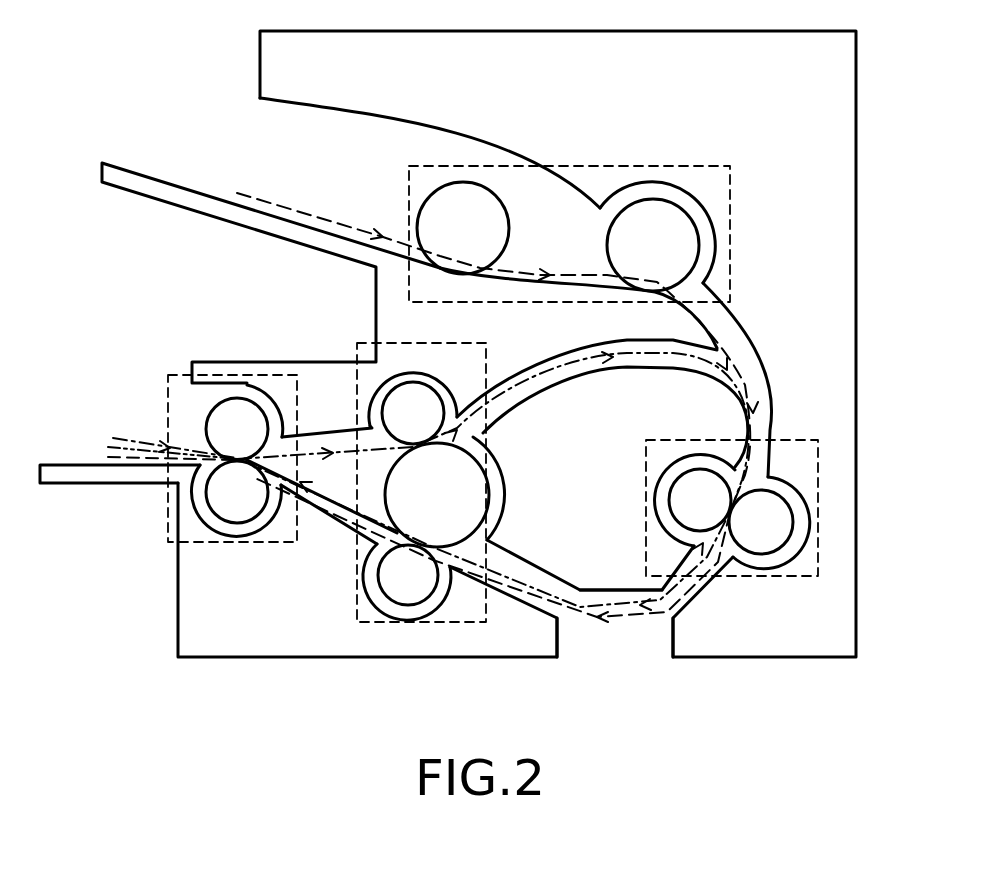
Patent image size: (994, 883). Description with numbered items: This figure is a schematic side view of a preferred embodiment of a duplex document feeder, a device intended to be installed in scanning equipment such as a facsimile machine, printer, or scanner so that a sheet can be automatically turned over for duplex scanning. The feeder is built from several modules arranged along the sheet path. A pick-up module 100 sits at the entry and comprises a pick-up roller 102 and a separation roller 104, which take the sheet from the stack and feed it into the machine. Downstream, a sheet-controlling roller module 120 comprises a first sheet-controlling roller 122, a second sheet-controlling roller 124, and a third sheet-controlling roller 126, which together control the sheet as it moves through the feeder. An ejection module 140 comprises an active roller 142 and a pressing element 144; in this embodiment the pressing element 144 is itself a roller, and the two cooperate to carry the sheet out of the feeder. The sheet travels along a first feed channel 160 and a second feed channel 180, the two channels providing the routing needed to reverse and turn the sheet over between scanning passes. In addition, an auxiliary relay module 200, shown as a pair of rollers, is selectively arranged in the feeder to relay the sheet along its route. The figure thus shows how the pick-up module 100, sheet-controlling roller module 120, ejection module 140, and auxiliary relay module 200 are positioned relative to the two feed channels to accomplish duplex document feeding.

The pick-up module 100 is at (591, 165).
The pick-up roller 102 is at (453, 213).
The separation roller 104 is at (675, 250).
The sheet-controlling roller module 120 is at (470, 622).
The first sheet-controlling roller 122 is at (402, 582).
The second sheet-controlling roller 124 is at (462, 502).
The third sheet-controlling roller 126 is at (403, 402).
The ejection module 140 is at (168, 440).
The active roller 142 is at (227, 493).
The pressing element 144 is at (225, 413).
The first feed channel 160 is at (617, 620).
The second feed channel 180 is at (358, 455).
The auxiliary relay module 200 is at (820, 513).